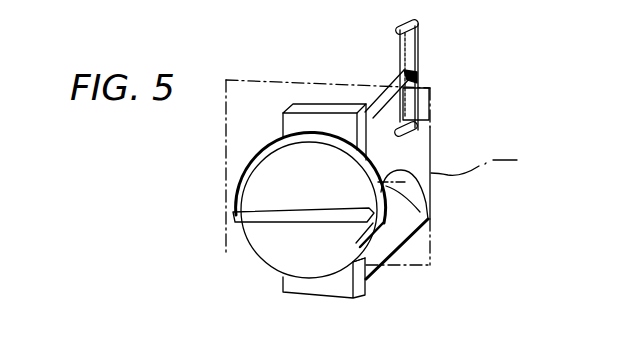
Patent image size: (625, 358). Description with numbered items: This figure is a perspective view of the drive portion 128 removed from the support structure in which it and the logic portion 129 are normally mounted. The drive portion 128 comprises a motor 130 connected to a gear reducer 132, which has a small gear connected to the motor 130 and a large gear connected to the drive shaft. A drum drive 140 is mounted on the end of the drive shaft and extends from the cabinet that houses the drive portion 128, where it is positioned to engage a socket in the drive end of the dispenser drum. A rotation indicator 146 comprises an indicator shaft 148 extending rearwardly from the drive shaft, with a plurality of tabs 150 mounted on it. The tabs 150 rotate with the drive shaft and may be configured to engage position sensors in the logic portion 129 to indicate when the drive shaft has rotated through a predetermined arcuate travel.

The drive portion 128 is at (389, 272).
The logic portion 129 is at (470, 164).
The motor 130 is at (410, 212).
The gear reducer 132 is at (298, 118).
The drum drive 140 is at (277, 232).
The rotation indicator 146 is at (425, 133).
The indicator shaft 148 is at (404, 66).
The tabs 150 is at (430, 99).